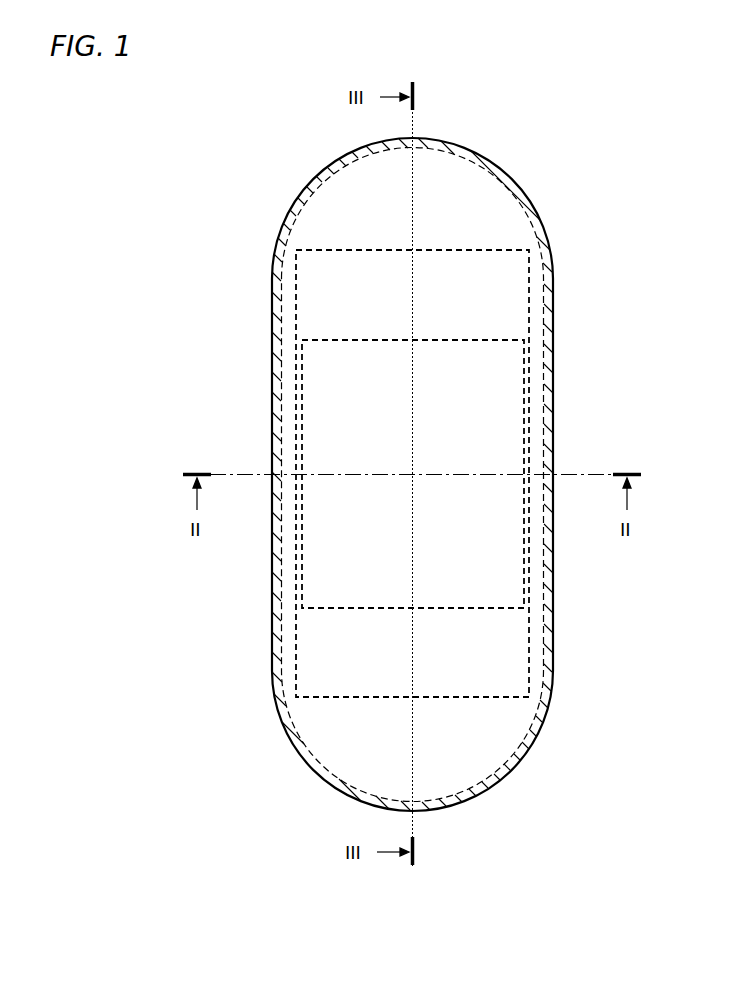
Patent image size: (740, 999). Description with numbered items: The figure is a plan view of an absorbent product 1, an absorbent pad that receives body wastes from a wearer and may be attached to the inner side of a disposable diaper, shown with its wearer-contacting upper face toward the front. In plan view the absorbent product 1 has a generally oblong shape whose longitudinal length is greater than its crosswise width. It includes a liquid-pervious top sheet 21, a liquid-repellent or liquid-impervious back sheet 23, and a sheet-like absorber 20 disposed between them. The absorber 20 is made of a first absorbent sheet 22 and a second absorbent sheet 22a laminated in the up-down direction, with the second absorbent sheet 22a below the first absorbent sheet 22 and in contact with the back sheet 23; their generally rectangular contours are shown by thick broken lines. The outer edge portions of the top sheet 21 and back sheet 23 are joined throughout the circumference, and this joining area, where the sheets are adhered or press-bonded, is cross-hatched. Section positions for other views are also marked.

The absorbent product 1 is at (247, 126).
The absorber 20 is at (600, 707).
The top sheet 21 is at (482, 715).
The first absorbent sheet 22 is at (541, 728).
The second absorbent sheet 22a is at (470, 612).
The back sheet 23 is at (500, 712).